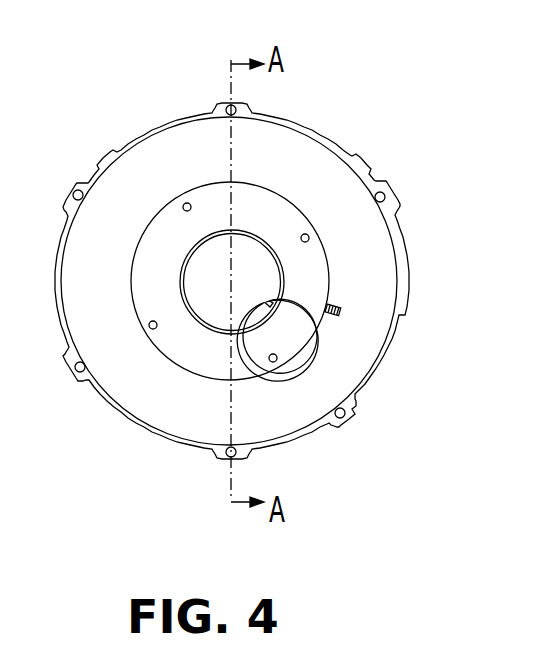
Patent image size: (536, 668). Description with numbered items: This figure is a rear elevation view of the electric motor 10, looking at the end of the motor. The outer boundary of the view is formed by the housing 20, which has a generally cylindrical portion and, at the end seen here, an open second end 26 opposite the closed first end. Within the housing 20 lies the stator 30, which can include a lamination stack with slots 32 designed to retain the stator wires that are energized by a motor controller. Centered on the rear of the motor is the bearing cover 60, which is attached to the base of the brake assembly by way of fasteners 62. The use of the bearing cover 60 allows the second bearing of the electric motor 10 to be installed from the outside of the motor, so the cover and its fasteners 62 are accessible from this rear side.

The electric motor 10 is at (358, 120).
The housing 20 is at (370, 414).
The open second end 26 is at (404, 262).
The stator 30 is at (160, 412).
The slots 32 is at (293, 415).
The bearing cover 60 is at (163, 235).
The fasteners 62 is at (150, 328).